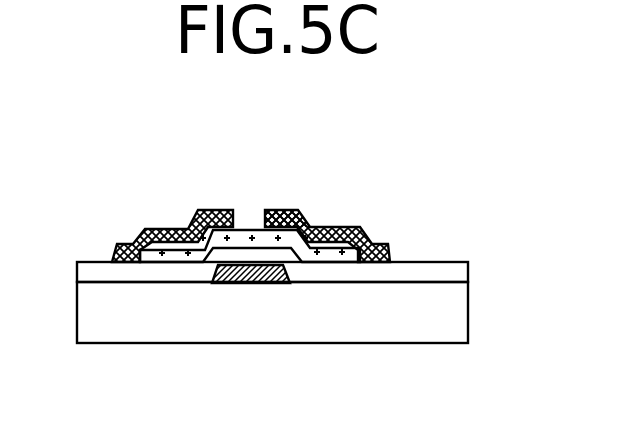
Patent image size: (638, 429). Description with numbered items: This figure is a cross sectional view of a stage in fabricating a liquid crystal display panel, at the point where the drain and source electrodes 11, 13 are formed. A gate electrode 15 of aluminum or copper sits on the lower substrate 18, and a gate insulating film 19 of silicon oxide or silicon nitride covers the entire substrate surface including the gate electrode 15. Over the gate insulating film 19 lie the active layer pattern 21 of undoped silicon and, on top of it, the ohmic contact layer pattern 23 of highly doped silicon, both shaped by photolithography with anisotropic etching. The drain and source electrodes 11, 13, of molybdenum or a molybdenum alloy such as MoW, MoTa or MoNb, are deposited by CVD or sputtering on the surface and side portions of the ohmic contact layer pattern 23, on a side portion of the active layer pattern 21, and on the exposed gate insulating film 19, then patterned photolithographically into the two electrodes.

The drain electrode 11 is at (316, 228).
The source electrode 13 is at (146, 230).
The gate electrode 15 is at (245, 283).
The lower substrate 18 is at (468, 318).
The gate insulating film 19 is at (468, 272).
The active layer pattern 21 is at (243, 231).
The ohmic contact layer pattern 23 is at (287, 211).